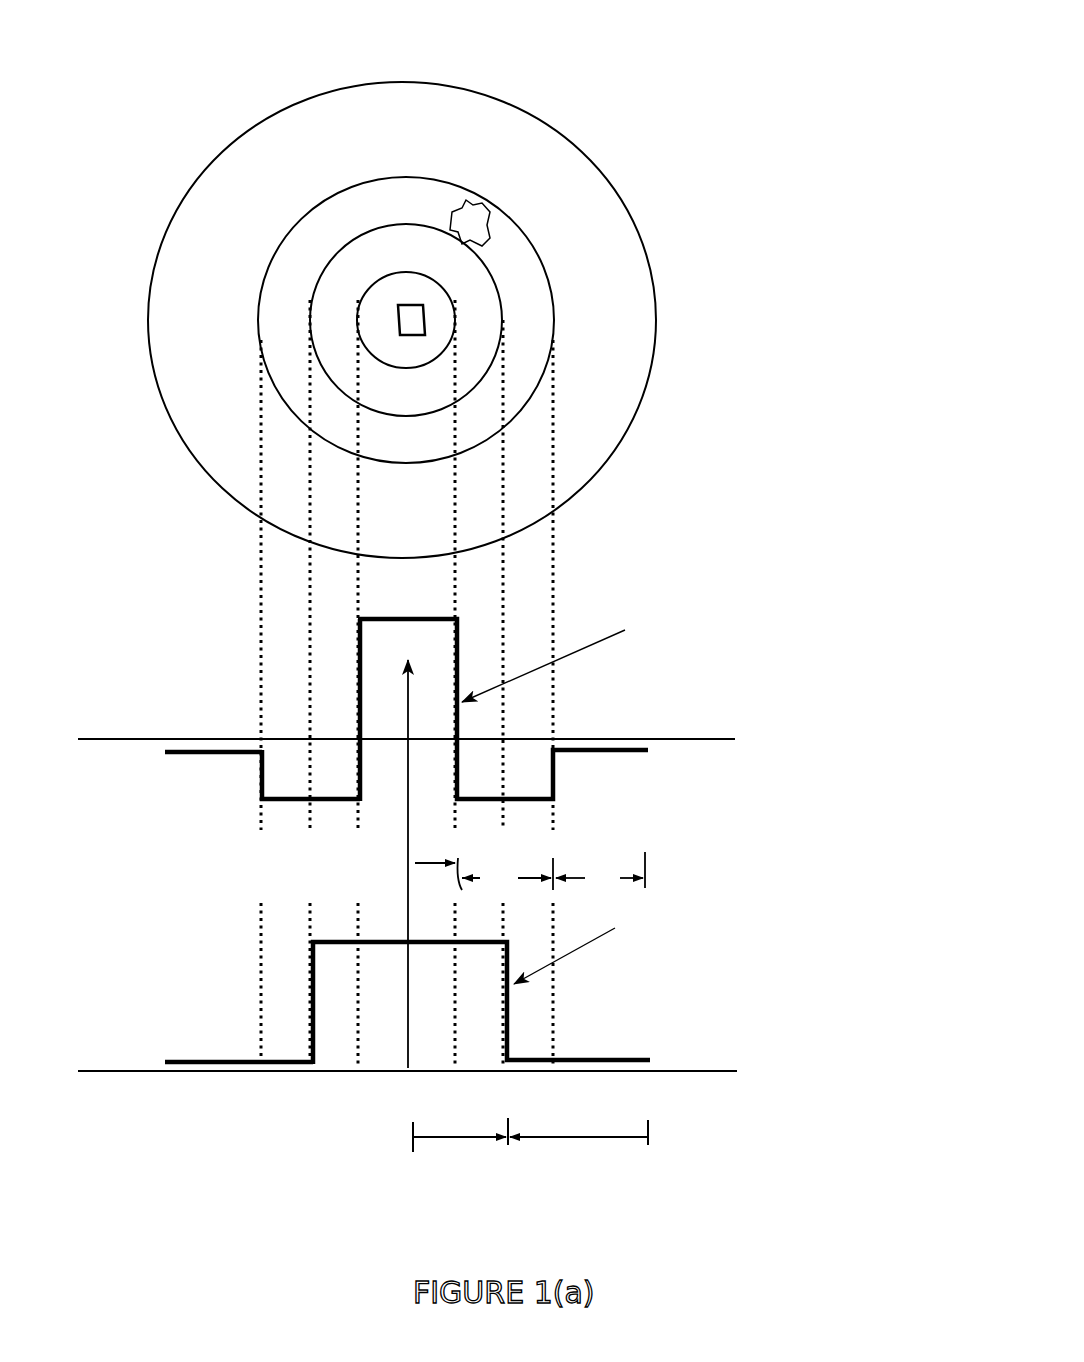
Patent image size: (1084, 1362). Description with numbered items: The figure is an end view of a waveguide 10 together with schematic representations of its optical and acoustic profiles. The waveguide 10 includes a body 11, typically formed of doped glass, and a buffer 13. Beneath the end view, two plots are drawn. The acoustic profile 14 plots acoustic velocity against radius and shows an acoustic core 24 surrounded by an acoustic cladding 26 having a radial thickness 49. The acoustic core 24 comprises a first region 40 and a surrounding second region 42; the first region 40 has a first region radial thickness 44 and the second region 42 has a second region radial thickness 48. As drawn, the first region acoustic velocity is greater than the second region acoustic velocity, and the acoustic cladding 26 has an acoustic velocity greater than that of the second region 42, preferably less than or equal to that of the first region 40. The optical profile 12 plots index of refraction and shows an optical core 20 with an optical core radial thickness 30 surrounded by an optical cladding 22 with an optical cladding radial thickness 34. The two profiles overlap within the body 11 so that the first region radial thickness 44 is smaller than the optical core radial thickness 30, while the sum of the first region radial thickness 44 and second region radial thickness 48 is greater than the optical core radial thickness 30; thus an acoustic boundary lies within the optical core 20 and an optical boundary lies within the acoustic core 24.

The waveguide 10 is at (724, 140).
The body 11 is at (452, 120).
The buffer 13 is at (590, 100).
The acoustic profile 14 is at (494, 698).
The optical profile 12 is at (510, 975).
The optical core 20 is at (305, 972).
The optical cladding 22 is at (208, 1042).
The acoustic core 24 is at (300, 652).
The acoustic cladding 26 is at (202, 713).
The first region 40 is at (355, 640).
The second region 42 is at (296, 778).
The first region radial thickness 44 is at (438, 859).
The second region radial thickness 48 is at (507, 877).
The radial thickness of acoustic cladding 49 is at (600, 874).
The optical core radial thickness 30 is at (443, 1150).
The optical cladding radial thickness 34 is at (565, 1140).